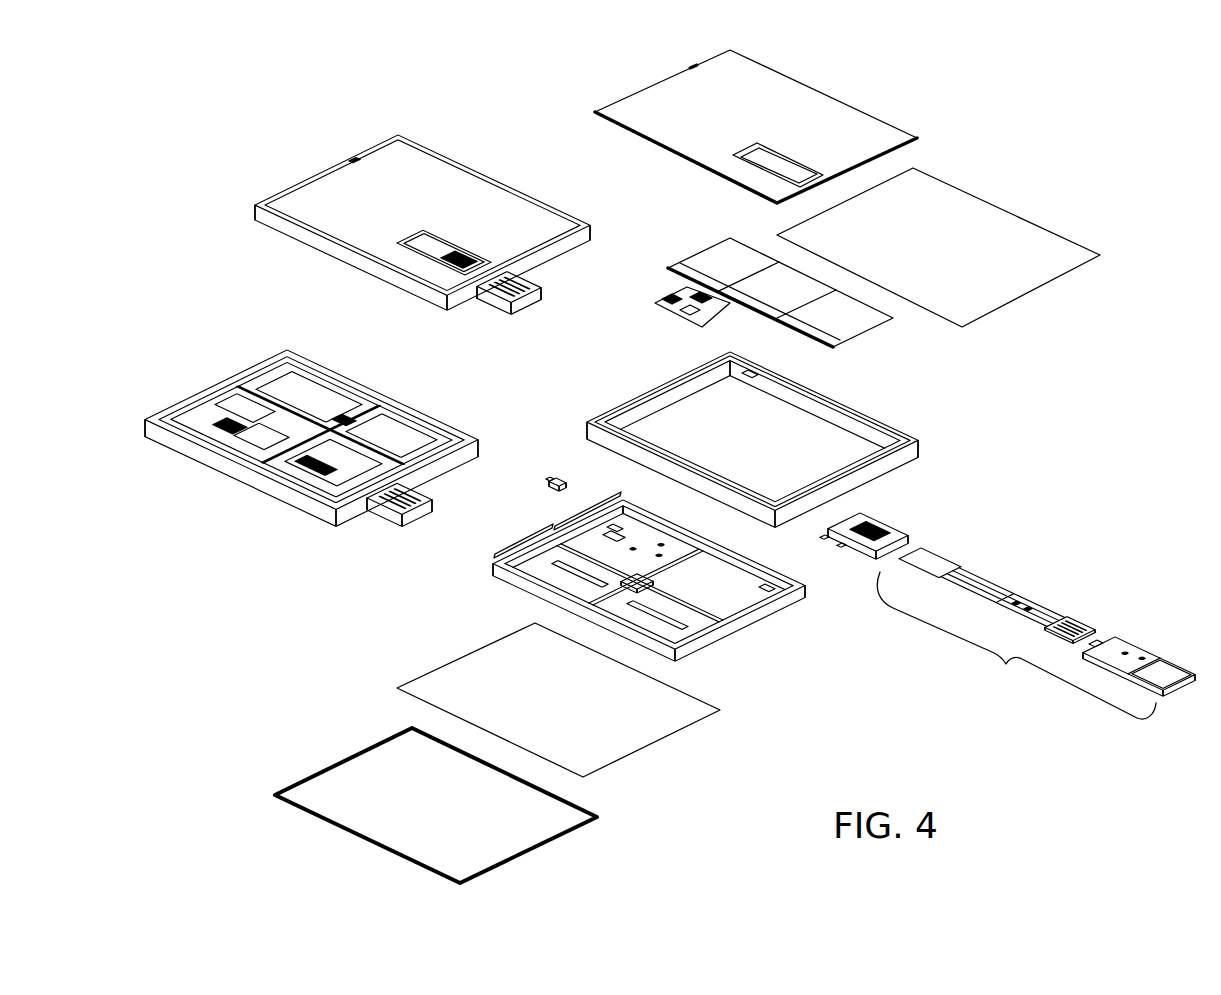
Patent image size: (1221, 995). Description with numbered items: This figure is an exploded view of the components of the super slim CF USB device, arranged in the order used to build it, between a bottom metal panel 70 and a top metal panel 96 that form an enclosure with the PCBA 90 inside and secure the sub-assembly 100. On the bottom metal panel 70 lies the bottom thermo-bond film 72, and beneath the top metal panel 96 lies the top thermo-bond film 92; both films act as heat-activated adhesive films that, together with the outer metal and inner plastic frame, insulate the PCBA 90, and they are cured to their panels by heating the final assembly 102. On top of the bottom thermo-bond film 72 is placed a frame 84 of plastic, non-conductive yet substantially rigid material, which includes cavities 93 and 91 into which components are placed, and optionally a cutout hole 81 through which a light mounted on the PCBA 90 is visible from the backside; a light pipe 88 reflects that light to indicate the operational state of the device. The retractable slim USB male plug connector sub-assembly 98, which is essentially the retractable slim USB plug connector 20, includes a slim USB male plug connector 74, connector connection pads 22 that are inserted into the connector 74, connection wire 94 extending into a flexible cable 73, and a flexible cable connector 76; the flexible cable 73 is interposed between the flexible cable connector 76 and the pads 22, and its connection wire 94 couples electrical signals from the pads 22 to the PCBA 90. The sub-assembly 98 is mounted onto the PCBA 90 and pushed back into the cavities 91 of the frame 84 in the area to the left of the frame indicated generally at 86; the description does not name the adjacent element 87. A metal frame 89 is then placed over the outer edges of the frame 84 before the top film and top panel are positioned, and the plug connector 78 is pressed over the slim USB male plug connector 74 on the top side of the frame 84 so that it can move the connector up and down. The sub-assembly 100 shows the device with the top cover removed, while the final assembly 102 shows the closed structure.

The top metal panel 96 is at (826, 92).
The top thermo-bond film 92 is at (992, 200).
The PCBA 90 is at (882, 332).
The final assembly 102 is at (396, 289).
The sub-assembly 100 is at (304, 516).
The retractable slim USB plug connector 20 is at (418, 522).
The metal frame 89 is at (927, 446).
The light pipe 88 is at (559, 473).
The frame 84 is at (717, 650).
The cavities 93 is at (655, 550).
The cavities 91 is at (568, 582).
The cutout hole 81 is at (614, 526).
The area located to the left of the frame 86 is at (519, 540).
The rail 87 is at (586, 506).
The plug connector 78 is at (885, 514).
The flexible cable 73 is at (1016, 579).
The flexible cable connector 76 is at (930, 563).
The connection wire 94 is at (976, 578).
The connector connection pads 22 is at (1081, 618).
The slim USB male plug connector 74 is at (1170, 666).
The retractable slim USB male plug connector sub-assembly 98 is at (1005, 666).
The bottom thermo-bond film 72 is at (630, 764).
The bottom metal panel 70 is at (375, 834).